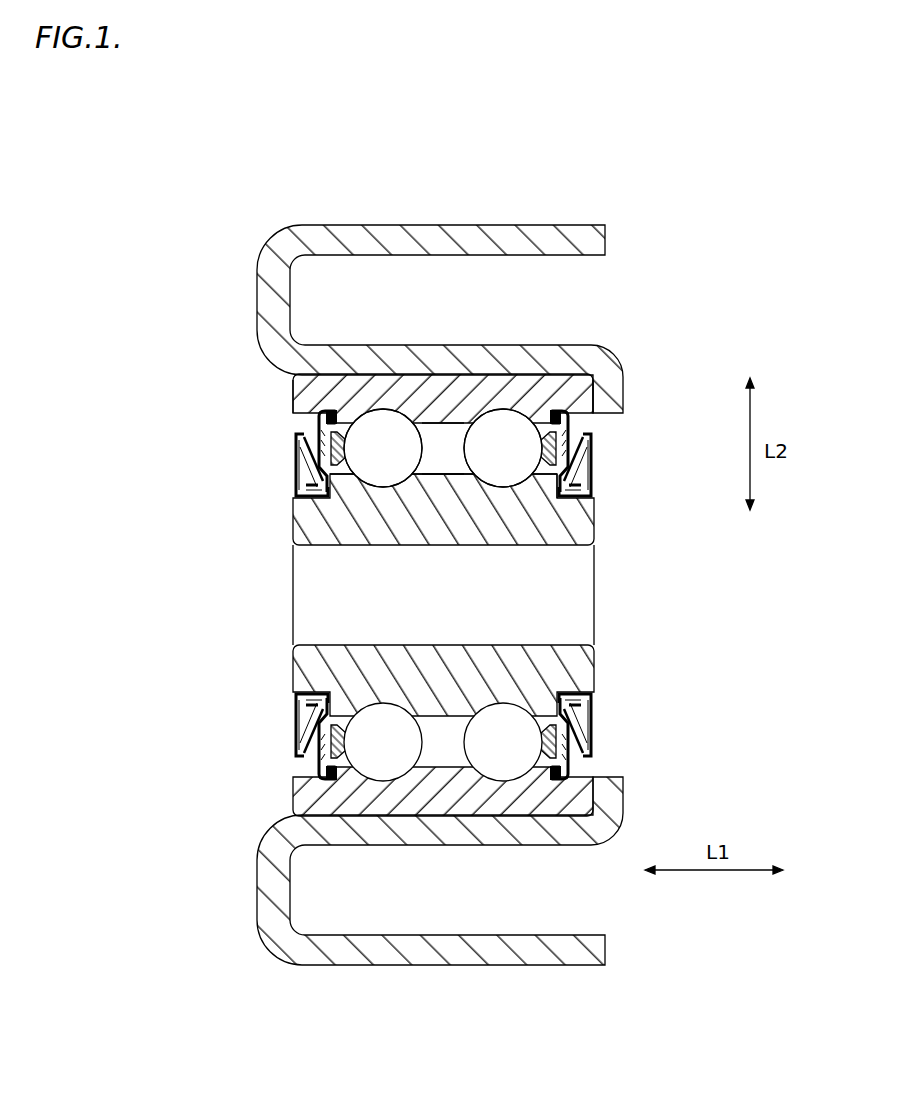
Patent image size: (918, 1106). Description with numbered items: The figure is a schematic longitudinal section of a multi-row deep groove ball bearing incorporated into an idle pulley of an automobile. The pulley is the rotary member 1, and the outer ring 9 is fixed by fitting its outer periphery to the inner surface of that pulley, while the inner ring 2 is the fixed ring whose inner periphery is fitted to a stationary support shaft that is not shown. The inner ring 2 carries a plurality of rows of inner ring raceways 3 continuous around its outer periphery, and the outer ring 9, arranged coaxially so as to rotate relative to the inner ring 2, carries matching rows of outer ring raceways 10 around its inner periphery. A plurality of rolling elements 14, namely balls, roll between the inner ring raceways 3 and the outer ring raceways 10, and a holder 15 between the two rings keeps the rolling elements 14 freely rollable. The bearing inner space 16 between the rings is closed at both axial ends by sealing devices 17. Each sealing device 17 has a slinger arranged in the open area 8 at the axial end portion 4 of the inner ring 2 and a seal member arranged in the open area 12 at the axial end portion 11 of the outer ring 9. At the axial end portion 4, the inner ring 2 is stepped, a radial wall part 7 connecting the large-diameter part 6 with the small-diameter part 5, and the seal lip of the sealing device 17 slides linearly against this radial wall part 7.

The rotary member 1 is at (431, 225).
The inner ring 2 is at (407, 527).
The inner ring raceways 3 is at (380, 490).
The axial end portion 4 is at (290, 531).
The small-diameter part 5 is at (575, 497).
The large-diameter part 6 is at (580, 505).
The radial wall part 7 is at (573, 471).
The open area 8 is at (350, 490).
The outer ring 9 is at (291, 387).
The outer ring raceways 10 is at (376, 420).
The axial end portion 11 is at (292, 403).
The open area 12 is at (567, 410).
The rolling elements 14 is at (392, 470).
The holder 15 is at (324, 413).
The bearing inner space 16 is at (432, 442).
The sealing device 17 is at (288, 463).